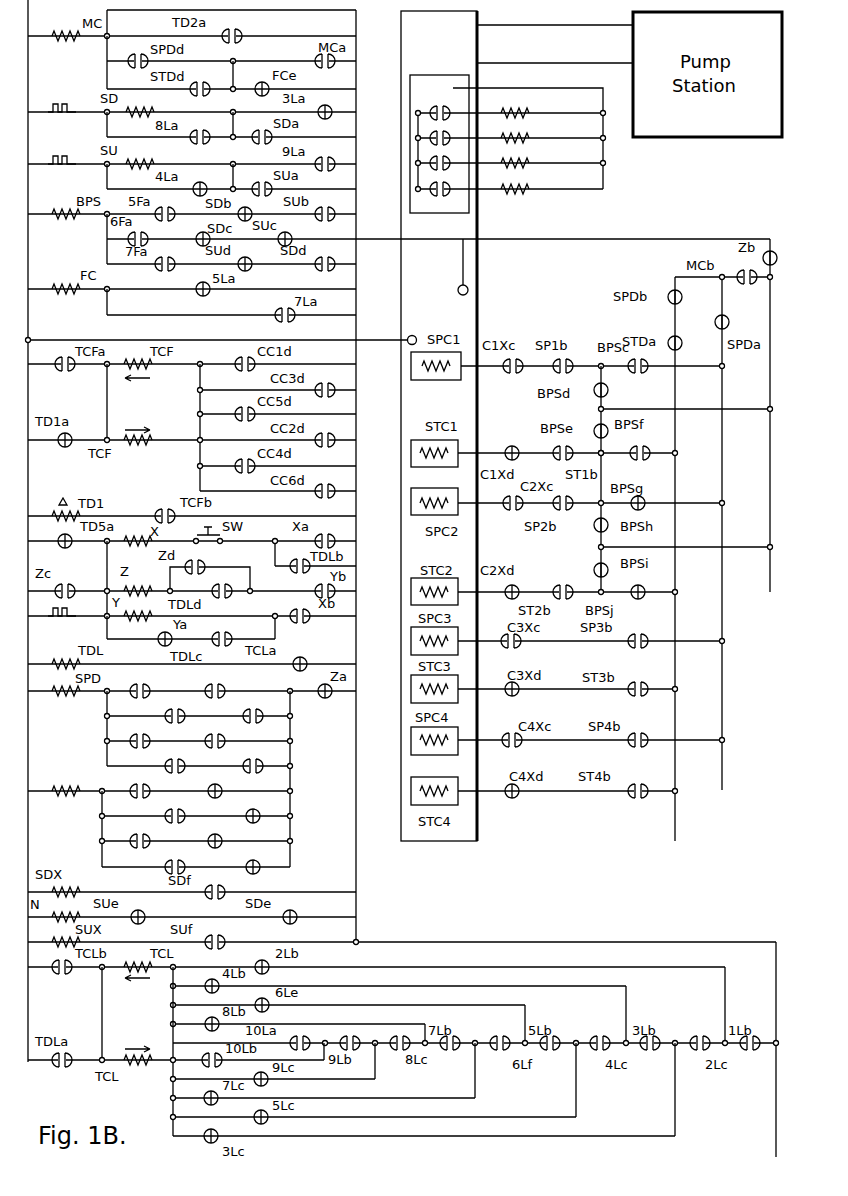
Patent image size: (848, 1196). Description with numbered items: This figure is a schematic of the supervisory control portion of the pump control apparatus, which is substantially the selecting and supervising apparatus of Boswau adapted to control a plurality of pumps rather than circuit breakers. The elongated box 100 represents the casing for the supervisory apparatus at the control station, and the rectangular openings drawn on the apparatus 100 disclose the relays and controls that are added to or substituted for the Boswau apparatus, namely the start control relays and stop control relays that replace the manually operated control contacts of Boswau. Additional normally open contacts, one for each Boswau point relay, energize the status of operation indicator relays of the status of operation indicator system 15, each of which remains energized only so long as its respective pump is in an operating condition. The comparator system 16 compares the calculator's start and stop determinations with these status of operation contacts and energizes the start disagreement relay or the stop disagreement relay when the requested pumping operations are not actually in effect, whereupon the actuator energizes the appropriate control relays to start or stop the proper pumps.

The status of operation indicator system 15 is at (561, 214).
The comparator system 16 is at (333, 753).
The casing for the supervisory apparatus 100 is at (530, 266).